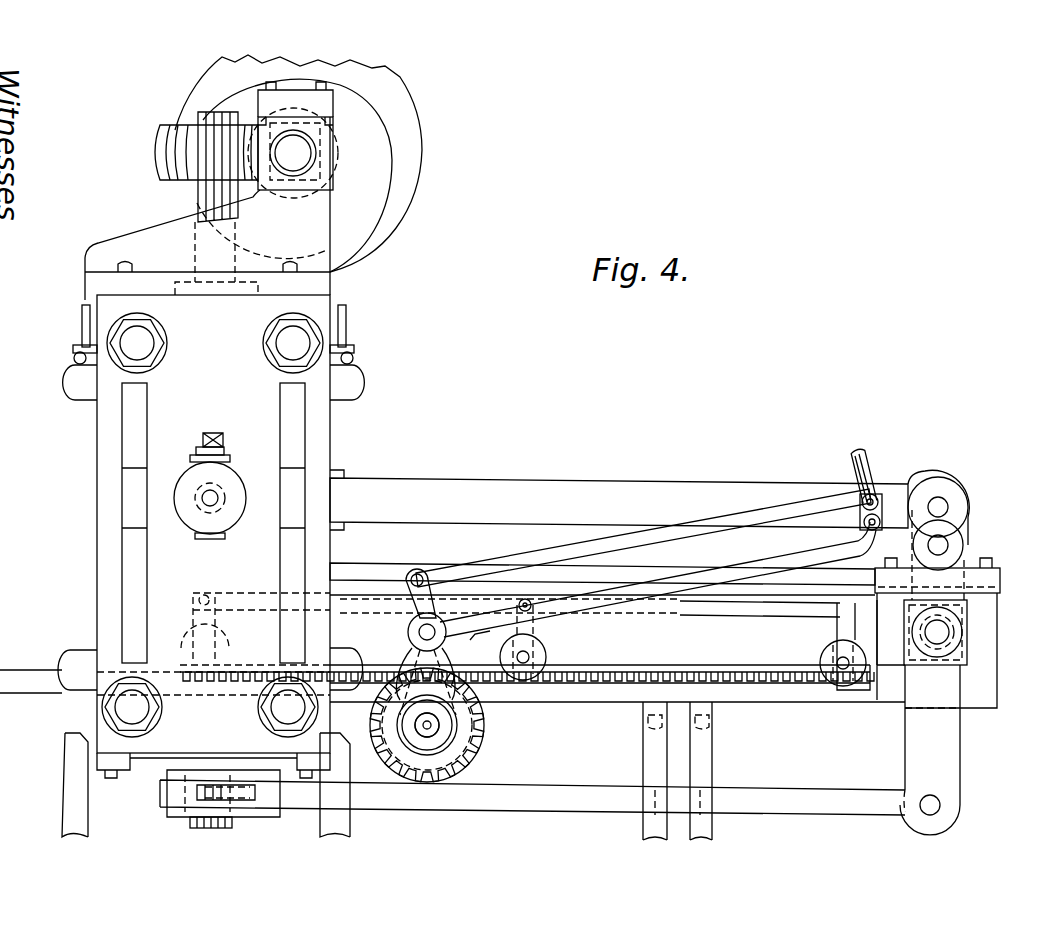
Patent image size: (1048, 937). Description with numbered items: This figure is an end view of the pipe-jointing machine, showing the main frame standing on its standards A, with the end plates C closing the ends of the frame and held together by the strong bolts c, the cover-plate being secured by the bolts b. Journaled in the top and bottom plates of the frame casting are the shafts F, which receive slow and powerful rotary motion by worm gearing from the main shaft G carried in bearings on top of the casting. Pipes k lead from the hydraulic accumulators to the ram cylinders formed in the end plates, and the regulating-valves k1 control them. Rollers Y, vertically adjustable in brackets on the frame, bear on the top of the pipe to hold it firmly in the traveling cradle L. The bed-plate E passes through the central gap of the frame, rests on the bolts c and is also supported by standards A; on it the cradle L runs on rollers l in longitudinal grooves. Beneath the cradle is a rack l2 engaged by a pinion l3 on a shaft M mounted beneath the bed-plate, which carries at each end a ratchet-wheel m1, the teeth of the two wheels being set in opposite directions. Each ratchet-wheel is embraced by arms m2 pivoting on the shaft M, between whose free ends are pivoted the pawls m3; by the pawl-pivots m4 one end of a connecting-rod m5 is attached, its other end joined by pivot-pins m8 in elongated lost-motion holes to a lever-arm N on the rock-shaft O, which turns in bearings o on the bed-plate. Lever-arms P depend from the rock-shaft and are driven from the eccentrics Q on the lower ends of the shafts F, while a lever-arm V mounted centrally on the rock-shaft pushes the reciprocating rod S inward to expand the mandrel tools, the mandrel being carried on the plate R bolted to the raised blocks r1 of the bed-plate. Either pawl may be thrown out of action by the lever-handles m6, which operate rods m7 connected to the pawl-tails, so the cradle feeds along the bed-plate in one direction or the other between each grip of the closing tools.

The shafts F is at (198, 118).
The main shaft G is at (298, 163).
The end plates C is at (207, 447).
The bolts c is at (212, 525).
The rollers Y is at (78, 355).
The bolts b is at (70, 383).
The pipes k is at (208, 500).
The regulating-valves k1 is at (223, 440).
The reciprocating rod S is at (619, 500).
The carrying-plate R is at (358, 575).
The traveling cradle L is at (795, 611).
The rollers l is at (526, 665).
The rack l2 is at (762, 680).
The pinion l3 is at (470, 755).
The bed-plate E is at (38, 688).
The ratchet-wheel m1 is at (400, 740).
The arms m2 is at (412, 727).
The pawls m3 is at (408, 603).
The pawl-pivots m4 is at (420, 638).
The connecting-rod m5 is at (770, 566).
The lever-handles m6 is at (868, 470).
The rods m7 is at (808, 512).
The pivot-pins m8 is at (940, 505).
The shaft M is at (428, 728).
The lever-arm V is at (952, 560).
The lever-arm N is at (948, 582).
The rock-shaft O is at (952, 630).
The bearings o is at (968, 658).
The raised blocks r1 is at (891, 632).
The lever-arms P is at (935, 752).
The eccentrics Q is at (175, 773).
The standards A is at (72, 790).